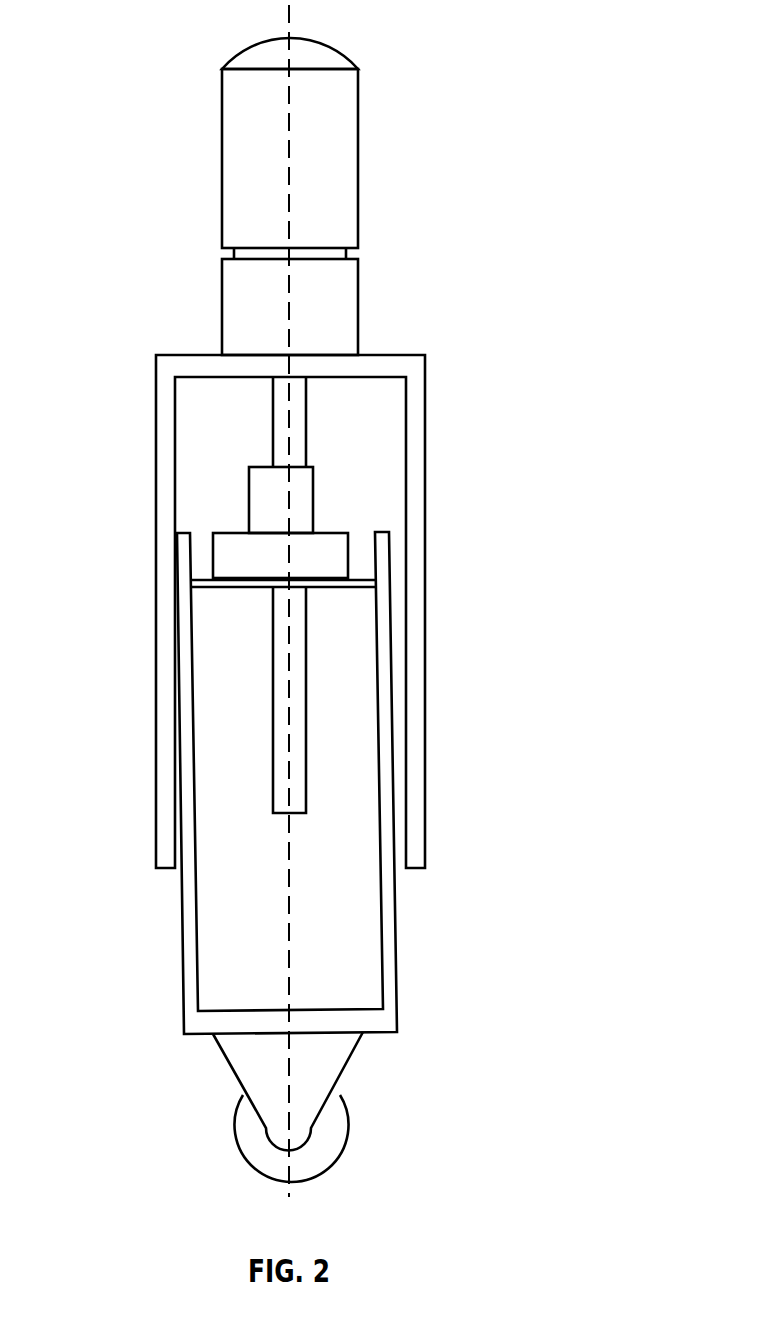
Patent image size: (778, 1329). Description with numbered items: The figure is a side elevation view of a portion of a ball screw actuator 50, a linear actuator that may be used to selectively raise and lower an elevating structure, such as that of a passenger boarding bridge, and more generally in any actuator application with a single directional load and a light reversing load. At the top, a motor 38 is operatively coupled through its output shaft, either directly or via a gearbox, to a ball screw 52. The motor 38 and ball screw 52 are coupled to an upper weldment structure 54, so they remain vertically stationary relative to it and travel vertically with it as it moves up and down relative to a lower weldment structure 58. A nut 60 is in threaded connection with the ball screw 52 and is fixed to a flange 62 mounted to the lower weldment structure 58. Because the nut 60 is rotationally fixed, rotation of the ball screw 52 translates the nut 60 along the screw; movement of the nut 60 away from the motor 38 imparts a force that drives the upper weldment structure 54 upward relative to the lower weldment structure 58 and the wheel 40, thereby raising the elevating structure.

The ball screw actuator 50 is at (103, 30).
The motor 38 is at (347, 137).
The wheel 40 is at (330, 1148).
The ball screw 52 is at (307, 431).
The upper weldment structure 54 is at (164, 443).
The lower weldment structure 58 is at (389, 977).
The nut 60 is at (304, 498).
The flange 62 is at (228, 558).